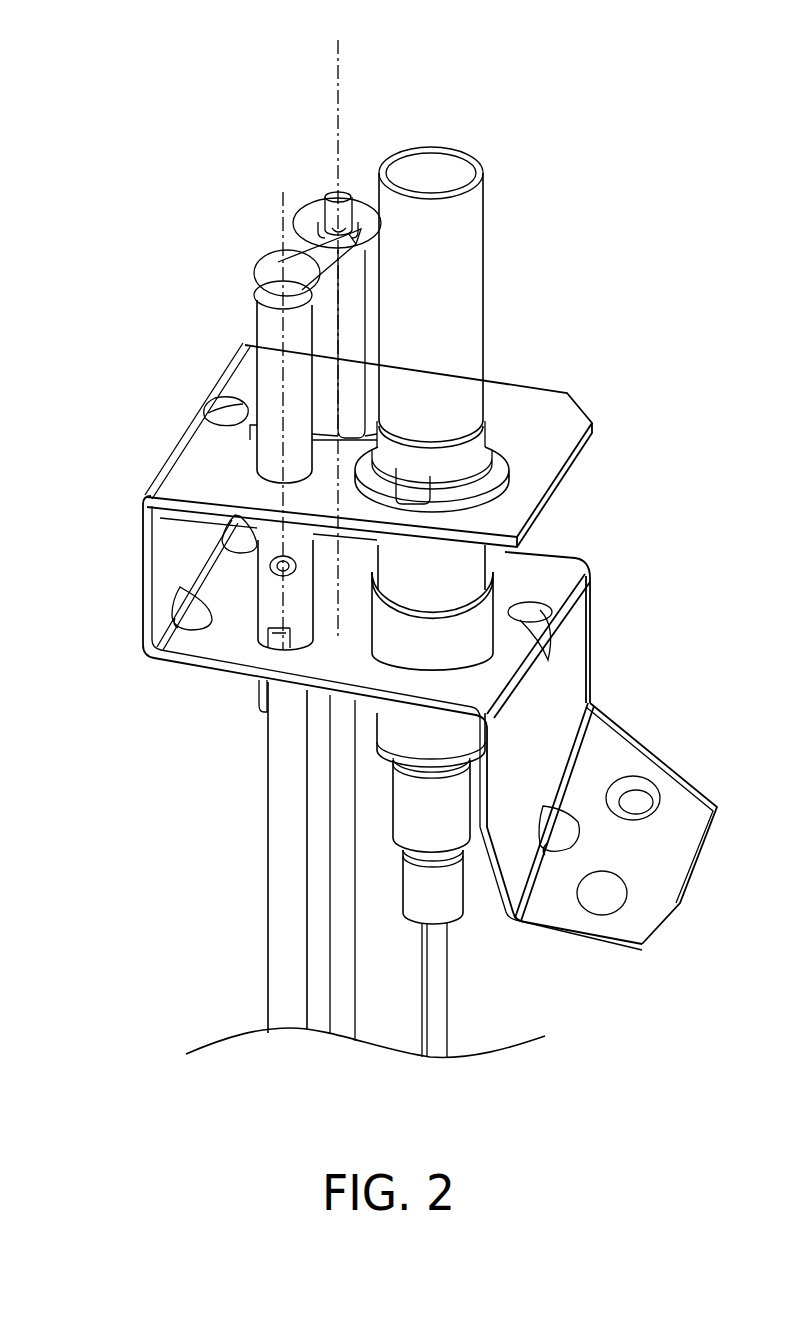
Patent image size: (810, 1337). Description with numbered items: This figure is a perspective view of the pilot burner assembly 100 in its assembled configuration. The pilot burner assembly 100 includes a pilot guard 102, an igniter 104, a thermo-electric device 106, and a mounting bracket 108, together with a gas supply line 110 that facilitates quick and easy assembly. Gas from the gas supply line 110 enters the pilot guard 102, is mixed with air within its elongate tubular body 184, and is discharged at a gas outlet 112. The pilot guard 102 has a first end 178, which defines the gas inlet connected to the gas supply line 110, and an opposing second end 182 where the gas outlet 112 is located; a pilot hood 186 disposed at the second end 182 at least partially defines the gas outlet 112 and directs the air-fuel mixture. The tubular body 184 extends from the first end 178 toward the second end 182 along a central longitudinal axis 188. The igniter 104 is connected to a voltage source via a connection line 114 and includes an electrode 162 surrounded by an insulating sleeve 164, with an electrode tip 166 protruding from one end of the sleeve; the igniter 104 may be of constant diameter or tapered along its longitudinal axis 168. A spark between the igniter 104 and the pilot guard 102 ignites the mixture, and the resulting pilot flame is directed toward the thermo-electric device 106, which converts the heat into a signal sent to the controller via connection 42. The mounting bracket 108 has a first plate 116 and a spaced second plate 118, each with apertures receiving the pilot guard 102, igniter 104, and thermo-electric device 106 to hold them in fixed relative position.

The pilot burner assembly 100 is at (152, 98).
The pilot guard 102 is at (245, 332).
The igniter 104 is at (305, 183).
The thermo-electric device 106 is at (500, 266).
The mounting bracket 108 is at (138, 572).
The gas supply line 110 is at (258, 800).
The gas outlet 112 is at (282, 305).
The connection line 114 is at (350, 1000).
The first plate 116 is at (532, 418).
The second plate 118 is at (530, 580).
The connection 42 is at (440, 985).
The electrode 162 is at (318, 222).
The insulating sleeve 164 is at (300, 233).
The electrode tip 166 is at (347, 190).
The longitudinal axis 168 is at (337, 100).
The first end 178 is at (258, 690).
The second end 182 is at (212, 290).
The tubular body 184 is at (265, 437).
The pilot hood 186 is at (250, 268).
The central longitudinal axis 188 is at (280, 412).